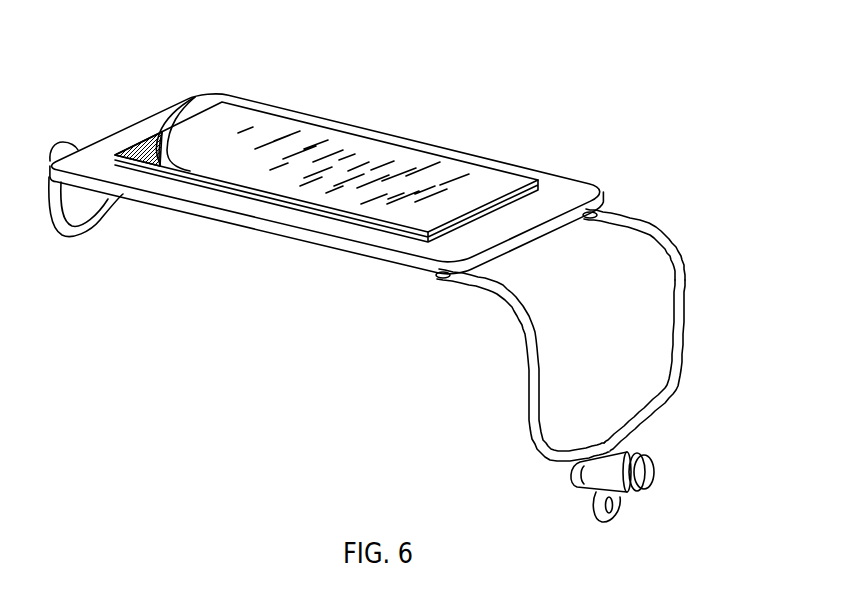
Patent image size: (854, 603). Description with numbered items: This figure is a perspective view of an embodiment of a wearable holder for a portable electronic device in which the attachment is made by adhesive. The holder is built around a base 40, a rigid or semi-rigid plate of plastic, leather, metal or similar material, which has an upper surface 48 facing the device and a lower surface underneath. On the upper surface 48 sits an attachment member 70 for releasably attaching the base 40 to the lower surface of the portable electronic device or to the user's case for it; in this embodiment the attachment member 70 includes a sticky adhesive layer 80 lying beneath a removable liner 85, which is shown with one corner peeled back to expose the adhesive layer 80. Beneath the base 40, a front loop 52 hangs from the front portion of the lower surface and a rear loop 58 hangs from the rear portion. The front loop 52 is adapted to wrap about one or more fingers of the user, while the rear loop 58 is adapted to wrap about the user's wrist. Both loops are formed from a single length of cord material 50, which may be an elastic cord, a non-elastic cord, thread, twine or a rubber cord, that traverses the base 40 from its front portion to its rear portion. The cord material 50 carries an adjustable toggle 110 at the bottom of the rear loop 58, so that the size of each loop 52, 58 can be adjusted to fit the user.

The base 40 is at (350, 233).
The upper surface 48 is at (557, 188).
The cord material 50 is at (627, 218).
The front loop 52 is at (98, 224).
The rear loop 58 is at (677, 338).
The attachment member 70 is at (417, 163).
The sticky adhesive layer 80 is at (141, 142).
The removable liner 85 is at (172, 124).
The adjustable toggle 110 is at (582, 468).